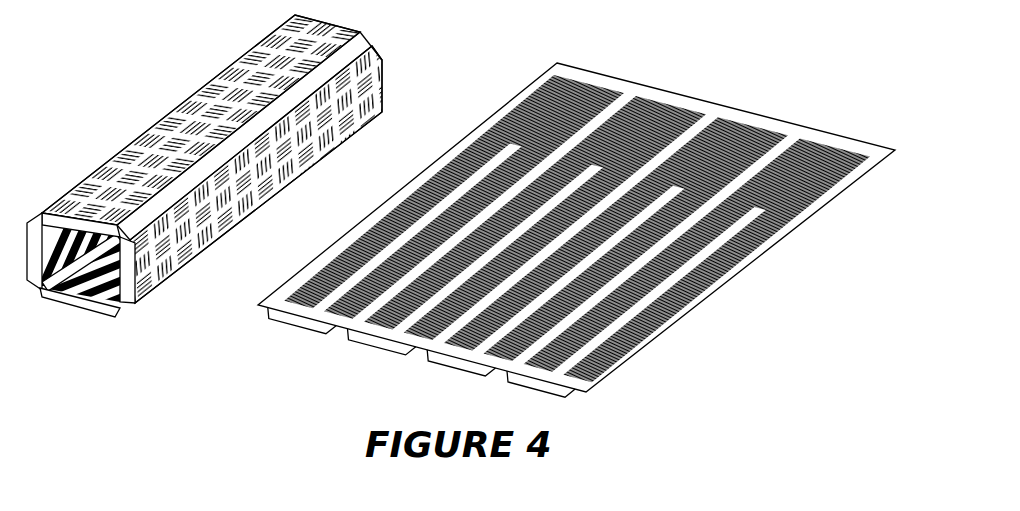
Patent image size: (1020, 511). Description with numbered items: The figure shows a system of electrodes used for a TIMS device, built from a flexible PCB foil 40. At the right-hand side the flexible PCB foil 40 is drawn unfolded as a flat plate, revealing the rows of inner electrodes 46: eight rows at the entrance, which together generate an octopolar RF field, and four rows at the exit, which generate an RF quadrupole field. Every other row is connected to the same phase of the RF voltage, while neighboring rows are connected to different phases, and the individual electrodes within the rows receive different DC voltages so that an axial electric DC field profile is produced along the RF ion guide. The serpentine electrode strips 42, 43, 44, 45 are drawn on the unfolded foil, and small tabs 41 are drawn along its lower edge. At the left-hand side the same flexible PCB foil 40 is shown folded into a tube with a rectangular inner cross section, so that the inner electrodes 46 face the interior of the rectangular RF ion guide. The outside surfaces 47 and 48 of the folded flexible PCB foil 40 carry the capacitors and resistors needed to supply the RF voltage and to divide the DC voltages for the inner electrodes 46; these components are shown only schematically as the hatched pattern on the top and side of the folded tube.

The flexible PCB foil 40 is at (576, 227).
The mounting tabs 41 is at (421, 353).
The first heating element 42 is at (603, 76).
The second heating element 43 is at (678, 96).
The third heating element 44 is at (759, 116).
The fourth heating element 45 is at (841, 137).
The inner electrodes 46 is at (123, 311).
The outside surface 47 is at (262, 70).
The outside surface 48 is at (381, 93).